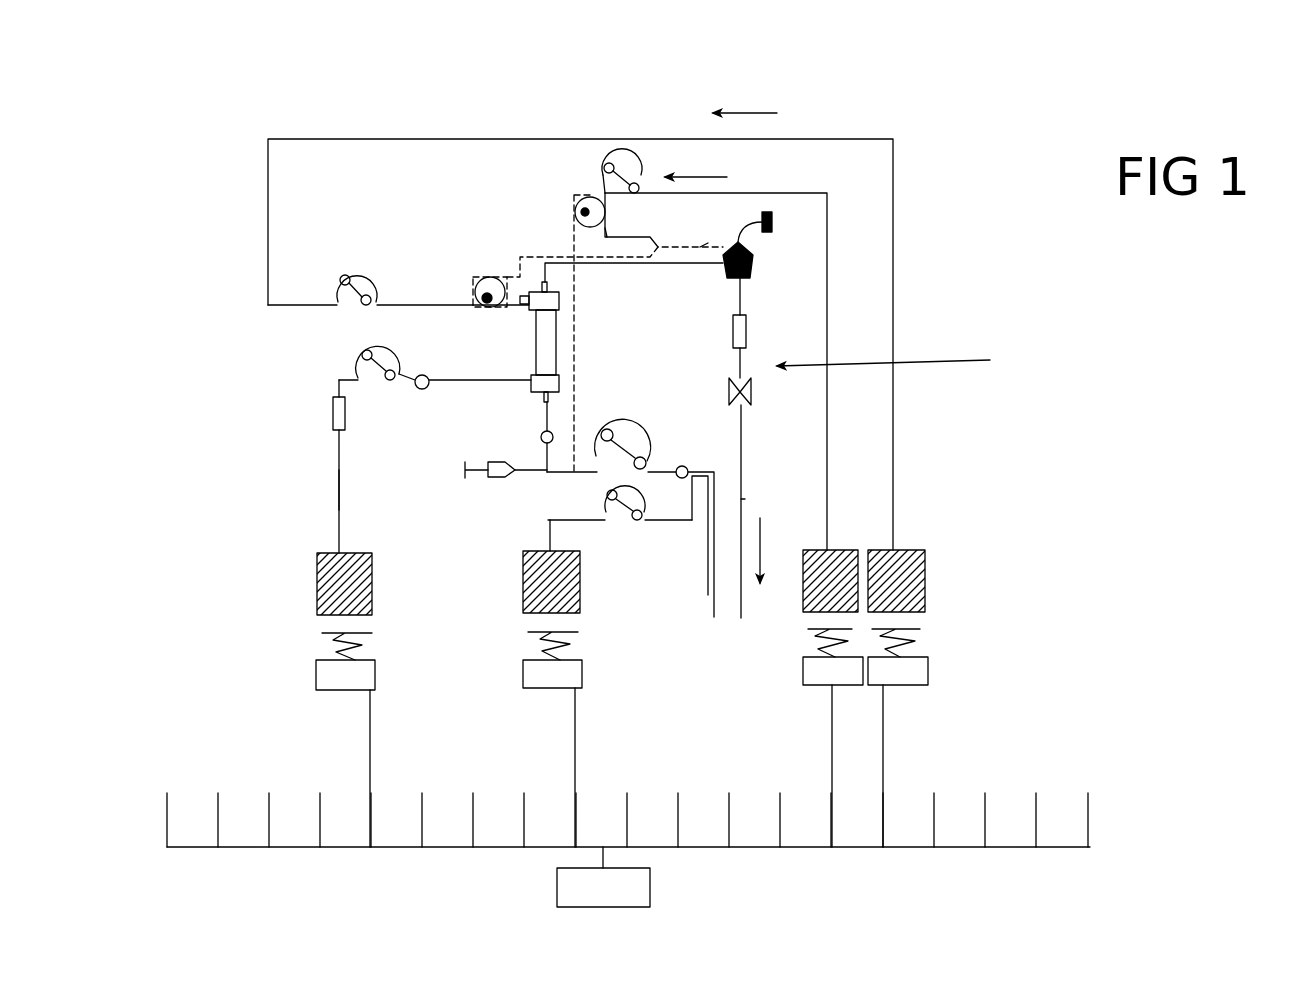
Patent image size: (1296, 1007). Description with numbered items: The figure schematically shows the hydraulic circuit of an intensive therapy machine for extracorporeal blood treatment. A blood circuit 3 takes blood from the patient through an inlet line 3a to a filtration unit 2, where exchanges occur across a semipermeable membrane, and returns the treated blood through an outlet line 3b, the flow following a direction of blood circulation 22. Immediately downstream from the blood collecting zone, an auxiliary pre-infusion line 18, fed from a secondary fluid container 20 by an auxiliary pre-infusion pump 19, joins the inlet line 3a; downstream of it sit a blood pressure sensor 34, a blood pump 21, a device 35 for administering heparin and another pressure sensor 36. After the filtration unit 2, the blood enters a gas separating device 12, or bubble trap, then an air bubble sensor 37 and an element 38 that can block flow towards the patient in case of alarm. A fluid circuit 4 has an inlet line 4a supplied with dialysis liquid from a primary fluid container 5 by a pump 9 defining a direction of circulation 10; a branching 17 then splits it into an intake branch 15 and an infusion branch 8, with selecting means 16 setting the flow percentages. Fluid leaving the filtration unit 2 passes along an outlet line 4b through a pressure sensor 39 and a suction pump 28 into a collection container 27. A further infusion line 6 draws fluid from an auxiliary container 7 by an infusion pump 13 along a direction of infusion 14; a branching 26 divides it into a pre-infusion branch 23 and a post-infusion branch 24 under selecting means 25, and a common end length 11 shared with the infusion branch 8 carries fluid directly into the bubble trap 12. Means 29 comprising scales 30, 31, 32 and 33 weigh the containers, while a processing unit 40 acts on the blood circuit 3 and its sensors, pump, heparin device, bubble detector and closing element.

The filtration unit 2 is at (545, 347).
The blood circuit 3 is at (879, 471).
The inlet line 3a is at (708, 570).
The outlet line 3b is at (741, 499).
The fluid circuit 4 is at (315, 416).
The inlet line 4a is at (893, 170).
The outlet line 4b is at (339, 490).
The primary fluid container 5 is at (925, 580).
The infusion line 6 is at (828, 428).
The auxiliary container 7 is at (808, 587).
The infusion branch 8 is at (521, 255).
The pump 9 is at (355, 268).
The direction of circulation 10 is at (760, 113).
The common end length 11 is at (607, 228).
The gas separating device 12 is at (753, 262).
The infusion pump 13 is at (640, 162).
The direction of infusion 14 is at (697, 170).
The intake branch 15 is at (504, 307).
The selecting means 16 is at (476, 248).
The branching 17 is at (477, 307).
The auxiliary pre-infusion line 18 is at (660, 523).
The auxiliary pre-infusion pump 19 is at (548, 518).
The secondary fluid container 20 is at (523, 578).
The blood pump 21 is at (637, 421).
The direction of blood circulation 22 is at (760, 541).
The pre-infusion branch 23 is at (573, 300).
The post-infusion branch 24 is at (708, 243).
The selecting means 25 is at (586, 183).
The branching 26 is at (606, 160).
The collection container 27 is at (317, 578).
The suction pump 28 is at (372, 372).
The weight determining means 29 is at (302, 693).
The scale 30 is at (925, 642).
The scale 31 is at (818, 650).
The scale 32 is at (525, 650).
The scale 33 is at (374, 645).
The blood pressure sensor 34 is at (687, 464).
The anticoagulant administering device 35 is at (495, 478).
The pressure sensor 36 is at (542, 434).
The air bubble sensor 37 is at (746, 330).
The closing element 38 is at (752, 390).
The pressure sensor 39 is at (356, 336).
The processing unit 40 is at (618, 900).